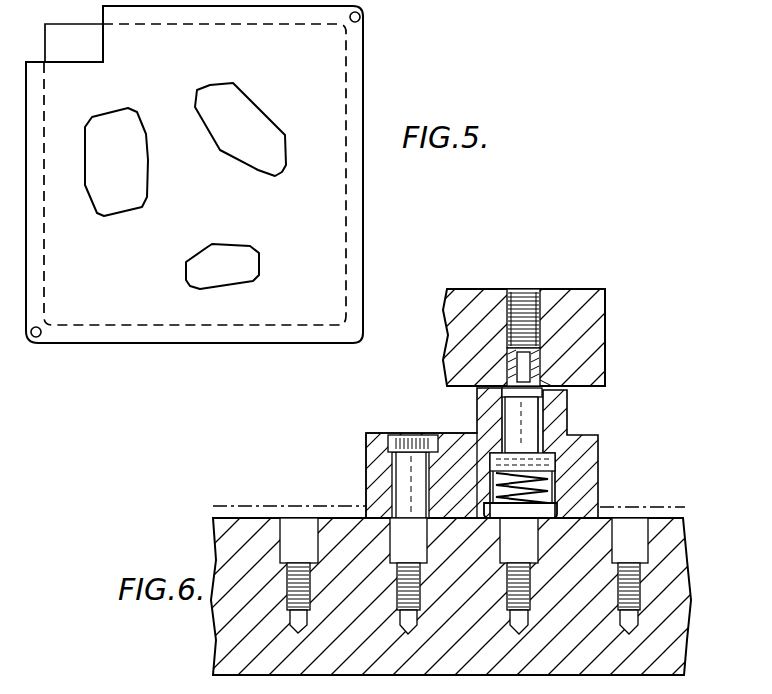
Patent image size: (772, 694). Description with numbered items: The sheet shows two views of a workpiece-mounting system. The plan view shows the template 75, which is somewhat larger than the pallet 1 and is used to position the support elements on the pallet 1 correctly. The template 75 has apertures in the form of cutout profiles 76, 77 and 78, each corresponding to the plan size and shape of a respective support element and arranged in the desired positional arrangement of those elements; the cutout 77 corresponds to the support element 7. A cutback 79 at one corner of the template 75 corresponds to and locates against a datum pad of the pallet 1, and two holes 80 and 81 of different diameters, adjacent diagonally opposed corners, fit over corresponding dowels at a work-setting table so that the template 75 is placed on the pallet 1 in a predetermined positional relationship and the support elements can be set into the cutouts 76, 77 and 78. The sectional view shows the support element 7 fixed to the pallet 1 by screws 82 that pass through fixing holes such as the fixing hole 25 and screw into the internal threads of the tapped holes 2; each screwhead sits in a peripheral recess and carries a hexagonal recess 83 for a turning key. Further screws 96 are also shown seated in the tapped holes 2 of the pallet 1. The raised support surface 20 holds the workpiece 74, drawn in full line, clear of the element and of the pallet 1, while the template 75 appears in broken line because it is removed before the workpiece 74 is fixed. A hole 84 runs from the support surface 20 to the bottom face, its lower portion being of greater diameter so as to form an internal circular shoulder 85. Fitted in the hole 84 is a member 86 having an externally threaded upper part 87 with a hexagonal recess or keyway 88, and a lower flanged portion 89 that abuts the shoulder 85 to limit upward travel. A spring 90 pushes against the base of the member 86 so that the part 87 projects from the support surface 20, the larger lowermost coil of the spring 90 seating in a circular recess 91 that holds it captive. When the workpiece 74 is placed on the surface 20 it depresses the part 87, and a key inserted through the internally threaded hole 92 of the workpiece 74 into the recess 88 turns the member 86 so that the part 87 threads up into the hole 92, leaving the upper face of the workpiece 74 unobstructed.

In FIG. 5, the pallet 1 is at (45, 19).
In FIG. 6, the pallet 1 is at (648, 668).
In FIG. 6, the tapped holes 2 is at (290, 536).
In FIG. 6, the support element 7 is at (598, 453).
In FIG. 6, the support surface 20 is at (548, 384).
In FIG. 6, the fixing hole 25 is at (393, 463).
In FIG. 6, the workpiece 74 is at (460, 284).
In FIG. 5, the template 75 is at (362, 207).
In FIG. 6, the template 75 is at (668, 506).
In FIG. 5, the cutout profile 76 is at (221, 247).
In FIG. 5, the cutout profile 77 is at (267, 172).
In FIG. 5, the cutout profile 78 is at (140, 177).
In FIG. 5, the cutback 79 is at (101, 44).
In FIG. 5, the hole 80 is at (38, 337).
In FIG. 5, the hole 81 is at (359, 21).
In FIG. 6, the screw 82 is at (405, 480).
In FIG. 6, the recess 83 is at (413, 430).
In FIG. 6, the hole 84 is at (542, 412).
In FIG. 6, the internal circular shoulder 85 is at (563, 437).
In FIG. 6, the member 86 is at (492, 408).
In FIG. 6, the upper part 87 is at (546, 363).
In FIG. 6, the recess or keyway 88 is at (526, 292).
In FIG. 6, the flanged portion 89 is at (556, 462).
In FIG. 6, the spring 90 is at (552, 495).
In FIG. 6, the circular recess 91 is at (483, 518).
In FIG. 6, the internally threaded hole 92 is at (531, 294).
In FIG. 6, the mounting bolt 96 is at (410, 606).